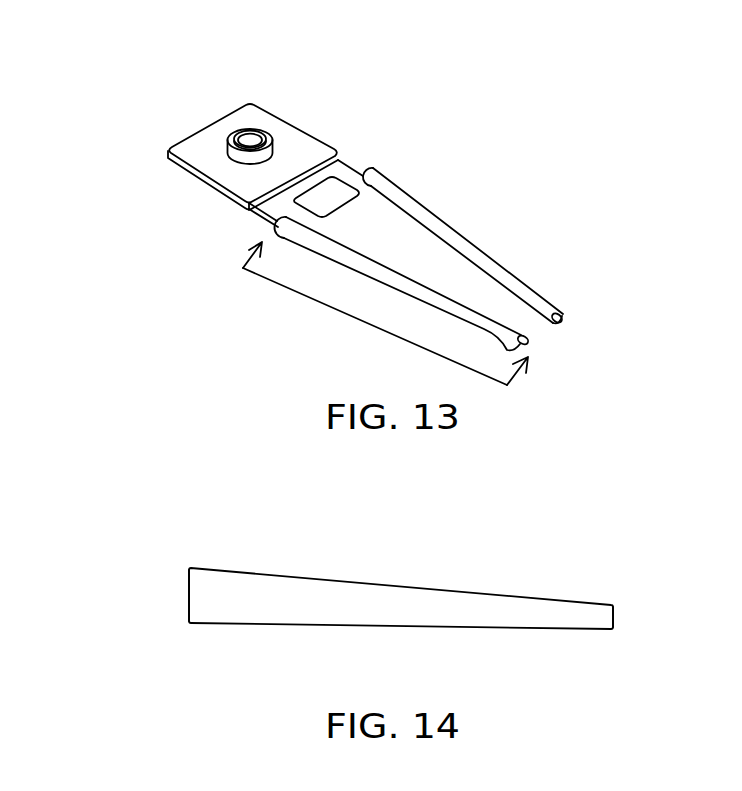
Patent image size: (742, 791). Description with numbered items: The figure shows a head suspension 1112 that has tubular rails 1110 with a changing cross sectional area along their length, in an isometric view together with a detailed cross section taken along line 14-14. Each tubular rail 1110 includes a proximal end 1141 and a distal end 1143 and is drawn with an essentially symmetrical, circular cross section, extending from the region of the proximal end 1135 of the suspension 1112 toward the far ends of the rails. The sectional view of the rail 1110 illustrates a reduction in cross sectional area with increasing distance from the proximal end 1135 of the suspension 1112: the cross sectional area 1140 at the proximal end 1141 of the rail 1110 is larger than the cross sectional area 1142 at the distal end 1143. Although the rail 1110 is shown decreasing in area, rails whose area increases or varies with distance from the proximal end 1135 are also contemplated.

In FIG. 13, the head suspension 1112 is at (486, 181).
In FIG. 13, the proximal end of suspension 1135 is at (171, 163).
In FIG. 13, the tubular rail 1110 is at (388, 182).
In FIG. 14, the tubular rail 1110 is at (360, 600).
In FIG. 13, the proximal end of rail 1141 is at (368, 170).
In FIG. 13, the distal end of rail 1143 is at (562, 316).
In FIG. 13, the line 14- 14 is at (374, 325).
In FIG. 14, the cross sectional area of proximal end 1140 is at (188, 590).
In FIG. 14, the cross sectional area of distal end 1142 is at (614, 617).